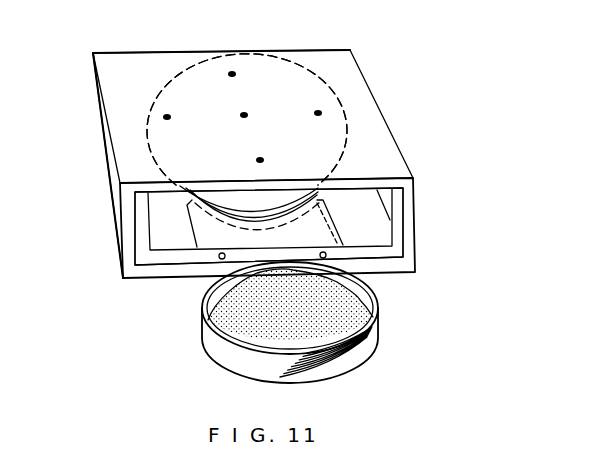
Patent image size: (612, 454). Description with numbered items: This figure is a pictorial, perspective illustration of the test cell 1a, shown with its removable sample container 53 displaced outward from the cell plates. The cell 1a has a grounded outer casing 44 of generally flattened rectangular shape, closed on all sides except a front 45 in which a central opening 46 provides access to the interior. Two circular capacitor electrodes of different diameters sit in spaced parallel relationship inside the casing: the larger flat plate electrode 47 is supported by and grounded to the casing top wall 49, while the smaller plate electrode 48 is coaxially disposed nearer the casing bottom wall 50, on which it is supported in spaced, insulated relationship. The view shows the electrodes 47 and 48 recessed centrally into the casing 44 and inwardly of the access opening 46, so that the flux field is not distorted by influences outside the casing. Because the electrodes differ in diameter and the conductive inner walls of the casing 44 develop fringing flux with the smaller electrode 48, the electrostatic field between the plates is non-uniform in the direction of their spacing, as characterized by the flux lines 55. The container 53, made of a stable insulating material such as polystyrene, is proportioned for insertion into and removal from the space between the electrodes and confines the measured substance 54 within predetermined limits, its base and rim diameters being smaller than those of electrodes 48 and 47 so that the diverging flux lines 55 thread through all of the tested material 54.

The cell 1a is at (398, 107).
The outer casing 44 is at (99, 118).
The front 45 is at (130, 242).
The central opening 46 is at (375, 225).
The flat plate electrode 47 is at (153, 158).
The plate electrode 48 is at (328, 173).
The casing top wall 49 is at (328, 57).
The casing bottom wall 50 is at (382, 222).
The container 53 is at (380, 330).
The measured substance 54 is at (203, 322).
The flux lines 55 is at (203, 230).